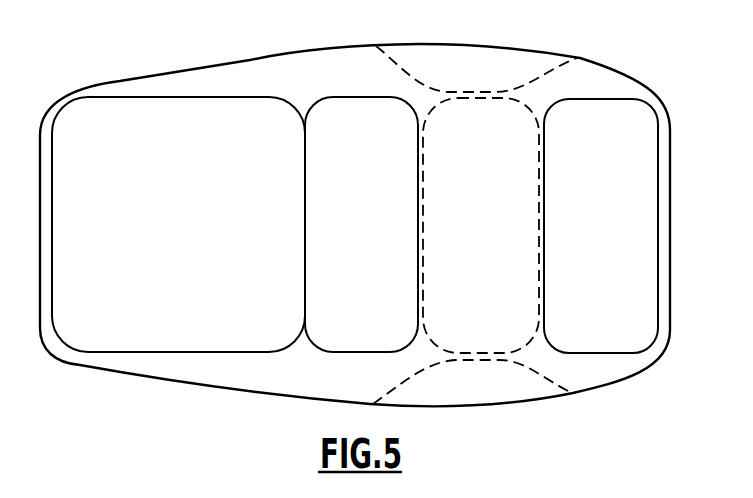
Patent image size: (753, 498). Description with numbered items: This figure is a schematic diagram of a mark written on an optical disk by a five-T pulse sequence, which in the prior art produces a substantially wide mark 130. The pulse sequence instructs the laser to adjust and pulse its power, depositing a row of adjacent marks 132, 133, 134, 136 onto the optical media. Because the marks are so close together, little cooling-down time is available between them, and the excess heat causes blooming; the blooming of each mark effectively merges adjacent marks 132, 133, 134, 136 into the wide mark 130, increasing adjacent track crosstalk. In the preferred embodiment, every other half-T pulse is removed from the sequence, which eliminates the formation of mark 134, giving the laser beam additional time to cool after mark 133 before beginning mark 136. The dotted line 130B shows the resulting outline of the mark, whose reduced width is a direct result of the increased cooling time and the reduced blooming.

The substantially wide mark 130 is at (505, 46).
The dotted line outline of reduced-width mark 130B is at (500, 363).
The adjacent mark 132 is at (150, 345).
The adjacent mark 133 is at (367, 103).
The adjacent mark 134 is at (448, 259).
The adjacent mark 136 is at (613, 335).